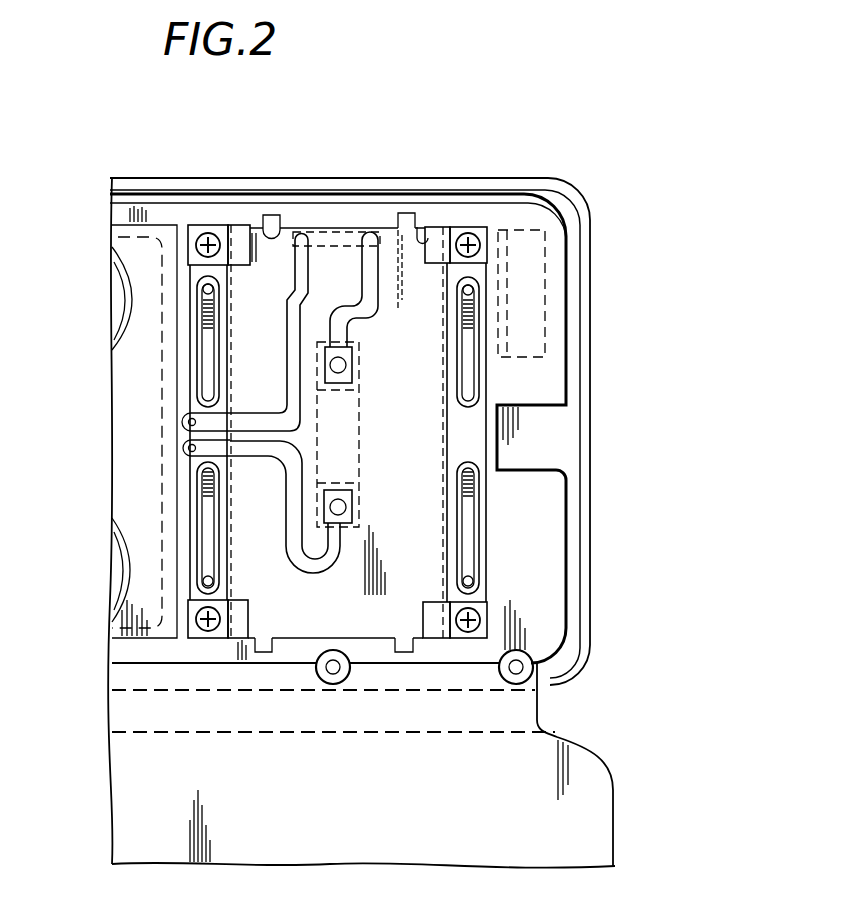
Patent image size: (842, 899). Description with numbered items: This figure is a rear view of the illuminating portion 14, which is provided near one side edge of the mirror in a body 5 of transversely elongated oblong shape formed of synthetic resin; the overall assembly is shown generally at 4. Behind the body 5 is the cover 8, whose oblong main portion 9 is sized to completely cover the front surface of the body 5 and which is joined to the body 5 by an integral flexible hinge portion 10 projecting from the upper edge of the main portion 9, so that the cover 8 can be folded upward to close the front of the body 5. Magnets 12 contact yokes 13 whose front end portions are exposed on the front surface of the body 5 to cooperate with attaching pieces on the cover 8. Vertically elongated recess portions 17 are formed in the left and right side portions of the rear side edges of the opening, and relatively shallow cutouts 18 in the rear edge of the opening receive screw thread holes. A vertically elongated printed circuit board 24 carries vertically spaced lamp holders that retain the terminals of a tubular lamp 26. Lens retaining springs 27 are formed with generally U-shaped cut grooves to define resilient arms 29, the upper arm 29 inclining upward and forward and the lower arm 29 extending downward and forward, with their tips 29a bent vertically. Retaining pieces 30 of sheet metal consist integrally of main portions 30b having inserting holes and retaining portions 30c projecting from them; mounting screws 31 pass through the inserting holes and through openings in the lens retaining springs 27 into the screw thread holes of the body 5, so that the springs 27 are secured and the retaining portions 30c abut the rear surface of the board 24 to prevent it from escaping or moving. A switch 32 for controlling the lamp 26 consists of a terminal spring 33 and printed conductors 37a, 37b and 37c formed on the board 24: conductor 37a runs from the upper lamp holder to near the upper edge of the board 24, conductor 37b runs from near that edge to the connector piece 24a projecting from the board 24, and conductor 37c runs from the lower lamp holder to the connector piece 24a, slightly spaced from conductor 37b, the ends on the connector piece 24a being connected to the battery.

The IC card 4 is at (80, 170).
The body 5 is at (590, 378).
The cover 8 is at (605, 773).
The main portion 9 is at (600, 818).
The flexible hinge portion 10 is at (525, 712).
The magnet 12 is at (527, 233).
The yoke 13 is at (502, 230).
The illuminating portion 14 is at (238, 290).
The recess portion 17 is at (190, 587).
The cutout 18 is at (270, 214).
The printed circuit board 24 is at (253, 517).
The connector piece 24a is at (184, 434).
The tubular lamp 26 is at (360, 442).
The lens retaining spring 27 is at (199, 382).
The resilient arm 29 is at (205, 347).
The contact tip 29a is at (202, 292).
The retaining piece 30 is at (240, 225).
The main portion 30b is at (210, 225).
The retaining portion 30c is at (258, 225).
The mounting screw 31 is at (197, 225).
The switch 32 is at (343, 232).
The terminal spring 33 is at (318, 240).
The printed conductor 37a is at (365, 235).
The printed conductor 37b is at (300, 233).
The printed conductor 37c is at (300, 567).